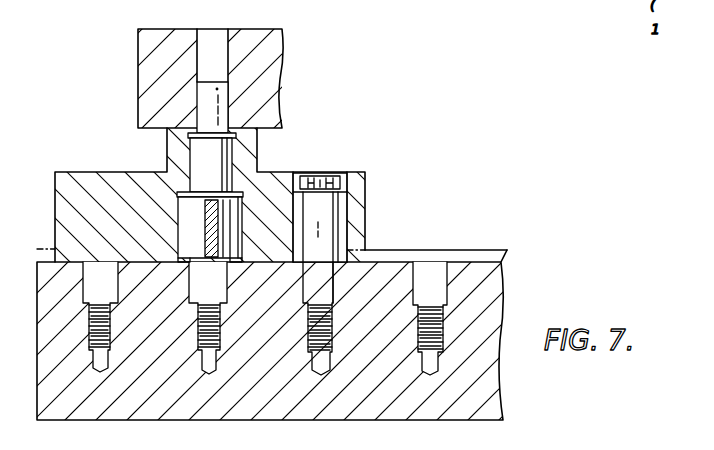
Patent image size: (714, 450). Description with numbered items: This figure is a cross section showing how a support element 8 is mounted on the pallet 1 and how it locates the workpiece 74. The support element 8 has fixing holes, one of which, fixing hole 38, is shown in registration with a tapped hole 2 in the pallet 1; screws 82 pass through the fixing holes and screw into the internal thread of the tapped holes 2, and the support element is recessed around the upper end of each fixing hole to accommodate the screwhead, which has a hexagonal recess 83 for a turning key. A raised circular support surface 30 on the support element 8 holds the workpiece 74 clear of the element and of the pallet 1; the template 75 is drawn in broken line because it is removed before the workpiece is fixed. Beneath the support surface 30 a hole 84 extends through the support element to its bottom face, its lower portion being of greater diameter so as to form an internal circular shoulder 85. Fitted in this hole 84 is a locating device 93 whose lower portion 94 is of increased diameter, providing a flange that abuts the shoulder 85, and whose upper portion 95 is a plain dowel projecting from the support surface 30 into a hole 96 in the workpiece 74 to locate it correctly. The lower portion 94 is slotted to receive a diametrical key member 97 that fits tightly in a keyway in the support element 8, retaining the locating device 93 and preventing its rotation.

The pallet 1 is at (493, 347).
The tapped holes 2 is at (440, 290).
The support element 8 is at (70, 192).
The support surface 30 is at (187, 136).
The fixing hole 38 is at (336, 207).
The workpiece 74 is at (281, 29).
The template 75 is at (462, 250).
The screws 82 is at (327, 230).
The recess 83 is at (331, 173).
The hole 84 is at (191, 153).
The internal circular shoulder 85 is at (176, 198).
The locating device 93 is at (215, 218).
The lower portion 94 is at (190, 220).
The upper portion 95 is at (200, 97).
The hole 96 is at (211, 18).
The key member 97 is at (327, 173).